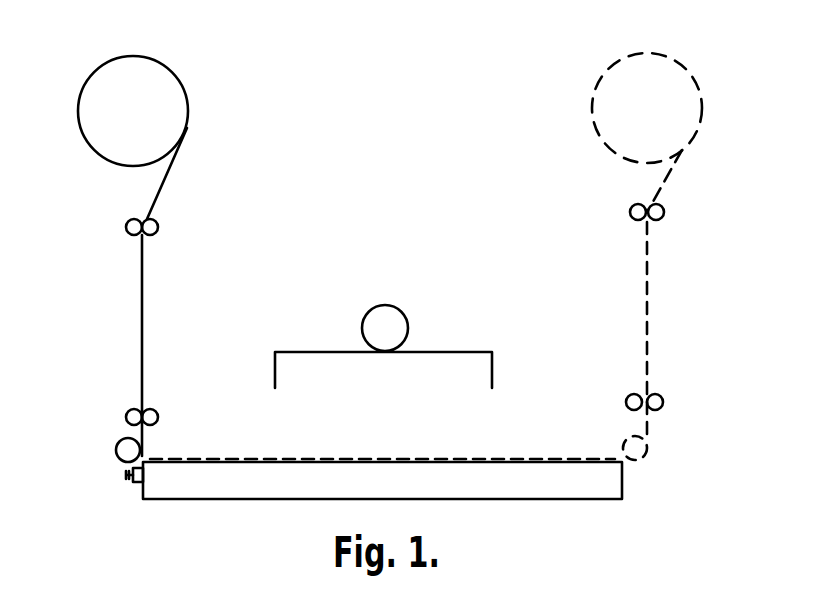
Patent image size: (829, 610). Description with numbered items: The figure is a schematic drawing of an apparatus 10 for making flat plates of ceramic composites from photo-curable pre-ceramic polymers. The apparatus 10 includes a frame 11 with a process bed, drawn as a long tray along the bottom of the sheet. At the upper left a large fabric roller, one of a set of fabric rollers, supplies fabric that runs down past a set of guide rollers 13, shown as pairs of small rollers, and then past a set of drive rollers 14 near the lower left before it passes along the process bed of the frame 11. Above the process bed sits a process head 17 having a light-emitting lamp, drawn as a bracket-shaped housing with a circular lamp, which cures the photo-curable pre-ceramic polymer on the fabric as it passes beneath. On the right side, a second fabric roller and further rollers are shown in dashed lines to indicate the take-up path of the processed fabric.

The apparatus 10 is at (413, 157).
The frame 11 is at (215, 489).
The guide rollers 13 is at (125, 222).
The drive rollers 14 is at (118, 444).
The process head 17 is at (462, 367).